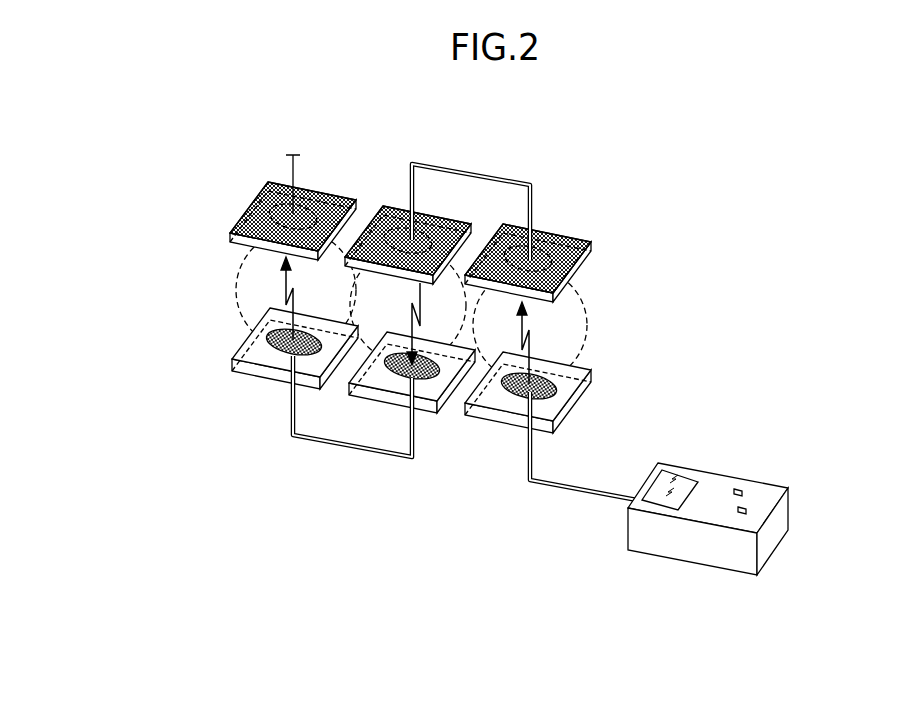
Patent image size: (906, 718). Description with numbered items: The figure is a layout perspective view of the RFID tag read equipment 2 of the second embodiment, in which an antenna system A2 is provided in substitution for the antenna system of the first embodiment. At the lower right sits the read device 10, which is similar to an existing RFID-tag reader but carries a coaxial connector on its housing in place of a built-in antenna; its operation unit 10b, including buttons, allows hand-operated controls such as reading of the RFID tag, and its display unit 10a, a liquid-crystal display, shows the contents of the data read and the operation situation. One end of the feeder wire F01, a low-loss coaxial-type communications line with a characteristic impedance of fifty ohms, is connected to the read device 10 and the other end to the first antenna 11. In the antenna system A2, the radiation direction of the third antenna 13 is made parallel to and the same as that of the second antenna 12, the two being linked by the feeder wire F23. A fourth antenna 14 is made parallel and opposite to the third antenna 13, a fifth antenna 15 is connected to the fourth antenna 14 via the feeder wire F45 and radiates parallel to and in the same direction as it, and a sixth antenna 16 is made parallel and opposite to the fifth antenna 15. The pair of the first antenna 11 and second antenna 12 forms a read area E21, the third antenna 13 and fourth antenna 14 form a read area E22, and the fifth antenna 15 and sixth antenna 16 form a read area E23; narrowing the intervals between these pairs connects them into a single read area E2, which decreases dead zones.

The RFID tag read equipment 2 is at (636, 138).
The read device 10 is at (736, 515).
The display unit 10a is at (658, 503).
The operation unit 10b is at (745, 491).
The first antenna 11 is at (590, 357).
The second antenna 12 is at (580, 233).
The third antenna 13 is at (393, 199).
The fourth antenna 14 is at (430, 417).
The fifth antenna 15 is at (267, 373).
The sixth antenna 16 is at (262, 187).
The feeder wire F01 is at (588, 482).
The feeder wire F23 is at (466, 174).
The feeder wire F45 is at (378, 457).
The read area E2 is at (210, 291).
The read area E21 is at (580, 339).
The read area E22 is at (470, 329).
The read area E23 is at (345, 303).
The antenna system A2 is at (573, 568).